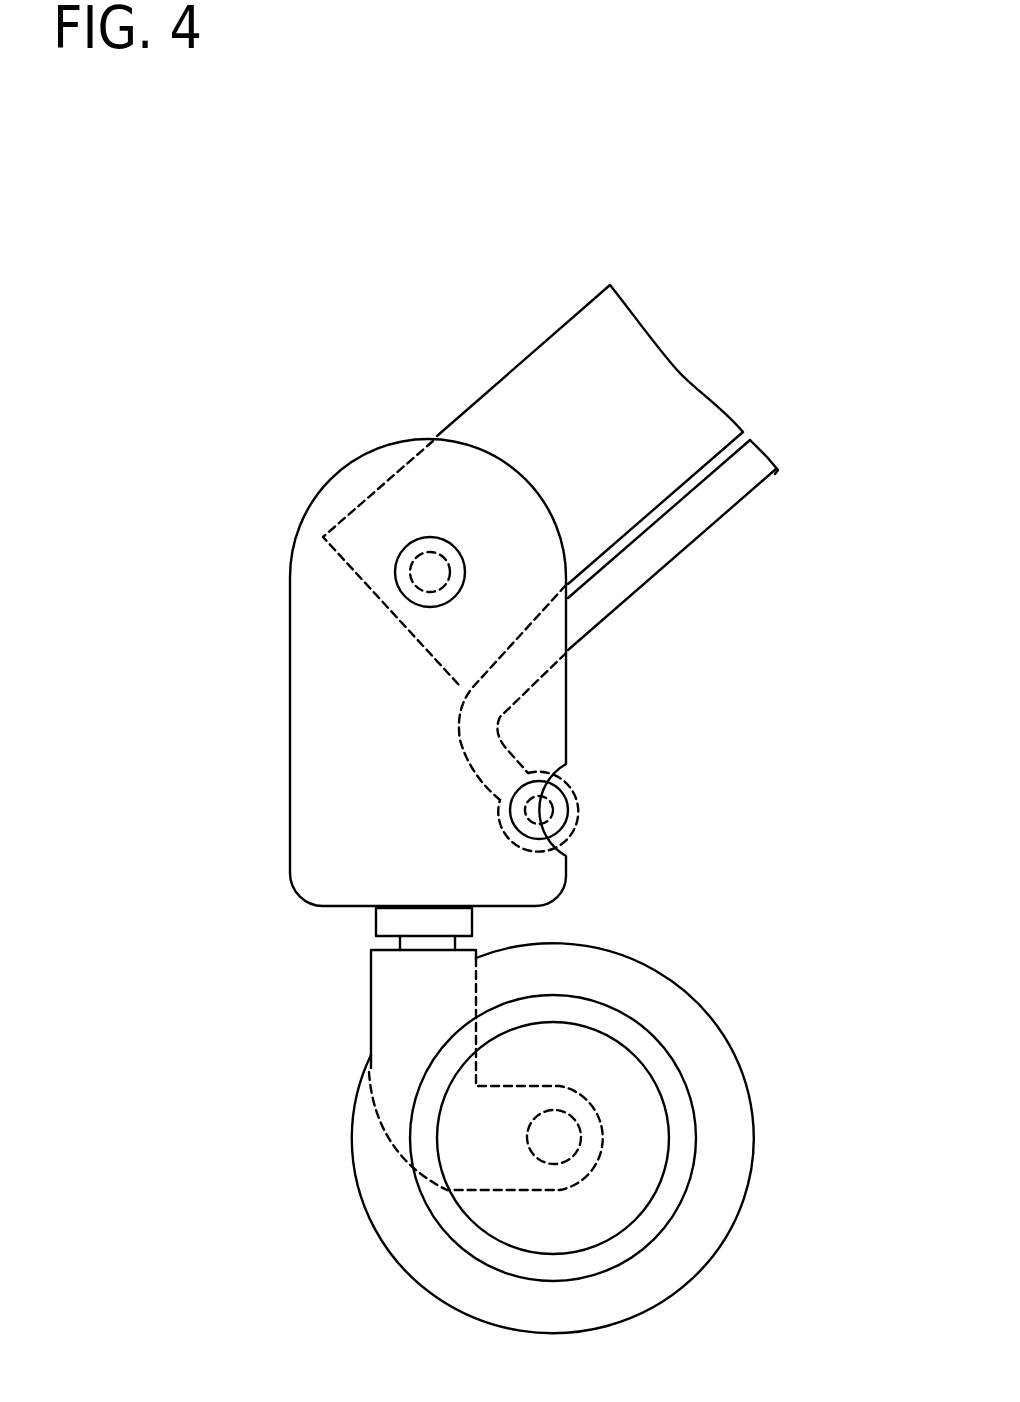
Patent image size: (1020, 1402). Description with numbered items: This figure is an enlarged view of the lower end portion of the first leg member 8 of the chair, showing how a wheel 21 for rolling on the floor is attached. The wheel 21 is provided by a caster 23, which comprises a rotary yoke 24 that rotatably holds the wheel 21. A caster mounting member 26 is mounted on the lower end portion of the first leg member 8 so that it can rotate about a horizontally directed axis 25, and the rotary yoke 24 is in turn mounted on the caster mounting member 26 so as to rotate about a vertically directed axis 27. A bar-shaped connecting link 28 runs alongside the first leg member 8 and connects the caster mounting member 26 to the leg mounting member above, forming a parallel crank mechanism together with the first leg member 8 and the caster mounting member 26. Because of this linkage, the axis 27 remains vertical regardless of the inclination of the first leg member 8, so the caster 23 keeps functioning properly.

The first leg member 8 is at (562, 341).
The wheel 21 is at (708, 1240).
The caster 23 is at (335, 1110).
The rotary yoke 24 is at (373, 1027).
The horizontally directed axis 25 is at (395, 568).
The caster mounting member 26 is at (300, 703).
The vertically directed axis 27 is at (397, 946).
The connecting link 28 is at (689, 537).